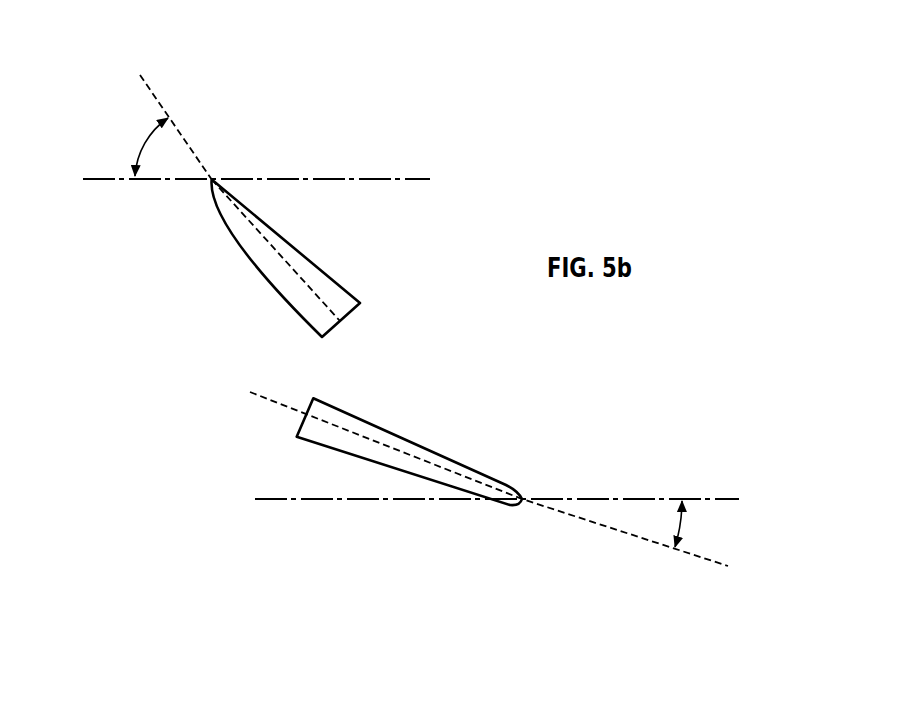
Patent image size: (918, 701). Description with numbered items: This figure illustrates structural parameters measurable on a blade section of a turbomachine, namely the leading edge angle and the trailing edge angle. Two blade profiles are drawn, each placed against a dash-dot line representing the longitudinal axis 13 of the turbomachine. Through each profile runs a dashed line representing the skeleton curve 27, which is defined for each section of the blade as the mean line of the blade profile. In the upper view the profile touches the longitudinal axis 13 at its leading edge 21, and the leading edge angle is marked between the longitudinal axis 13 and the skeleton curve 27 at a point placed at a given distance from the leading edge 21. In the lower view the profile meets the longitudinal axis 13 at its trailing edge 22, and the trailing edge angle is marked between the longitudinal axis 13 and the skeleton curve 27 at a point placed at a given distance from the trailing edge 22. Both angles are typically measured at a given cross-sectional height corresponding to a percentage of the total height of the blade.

The longitudinal axis 13 is at (413, 178).
The leading edge 21 is at (213, 175).
The trailing edge 22 is at (527, 496).
The skeleton curve 27 is at (278, 254).